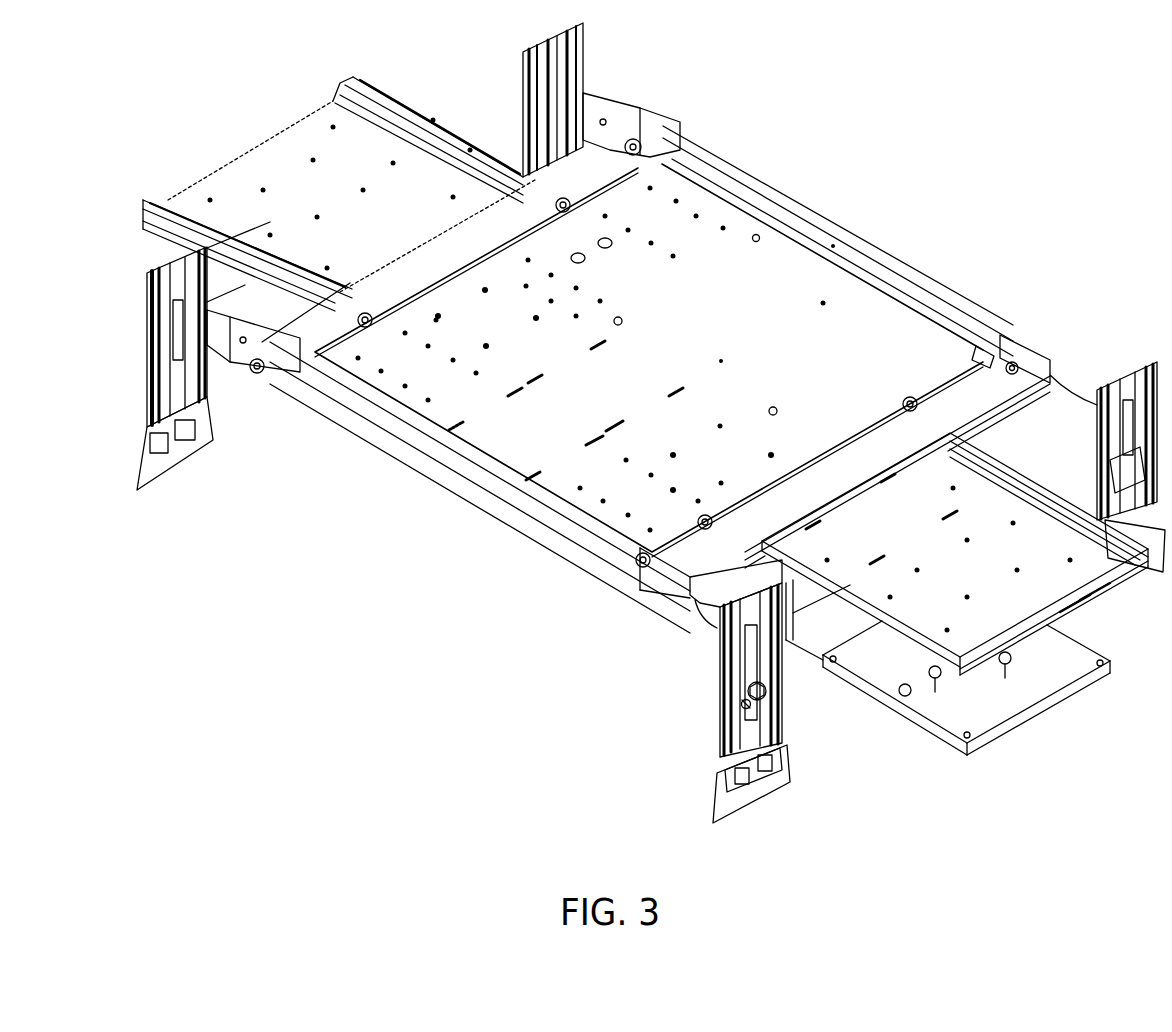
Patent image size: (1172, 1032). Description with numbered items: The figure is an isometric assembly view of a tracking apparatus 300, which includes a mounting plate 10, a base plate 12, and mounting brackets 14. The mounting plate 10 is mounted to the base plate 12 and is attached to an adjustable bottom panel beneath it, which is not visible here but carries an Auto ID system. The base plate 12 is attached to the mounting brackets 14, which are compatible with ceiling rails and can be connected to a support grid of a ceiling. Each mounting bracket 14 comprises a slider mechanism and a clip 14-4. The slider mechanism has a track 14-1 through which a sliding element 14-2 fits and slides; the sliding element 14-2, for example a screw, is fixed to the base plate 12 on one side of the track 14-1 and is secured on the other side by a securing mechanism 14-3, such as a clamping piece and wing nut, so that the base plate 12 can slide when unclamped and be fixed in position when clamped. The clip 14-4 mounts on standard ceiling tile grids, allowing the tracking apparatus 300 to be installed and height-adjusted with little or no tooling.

The mounting plate 10 is at (322, 208).
The base plate 12 is at (680, 297).
The mounting bracket 14 is at (818, 775).
The track 14-1 is at (747, 646).
The sliding element 14-2 is at (745, 690).
The securing mechanism 14-3 is at (742, 705).
The clip 14-4 is at (732, 789).
The tracking apparatus 300 is at (345, 786).